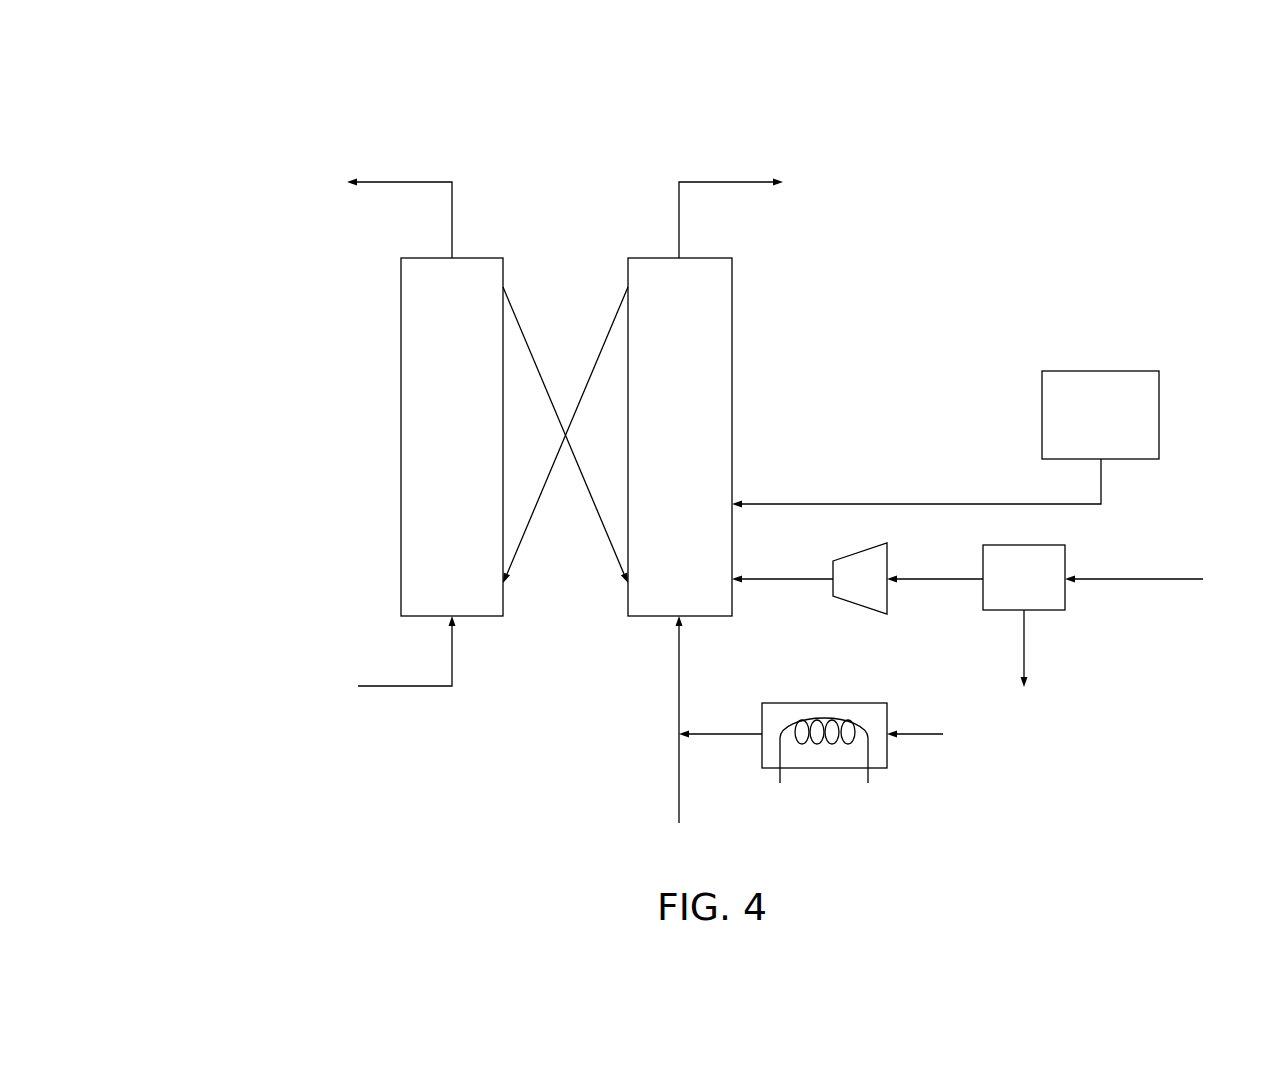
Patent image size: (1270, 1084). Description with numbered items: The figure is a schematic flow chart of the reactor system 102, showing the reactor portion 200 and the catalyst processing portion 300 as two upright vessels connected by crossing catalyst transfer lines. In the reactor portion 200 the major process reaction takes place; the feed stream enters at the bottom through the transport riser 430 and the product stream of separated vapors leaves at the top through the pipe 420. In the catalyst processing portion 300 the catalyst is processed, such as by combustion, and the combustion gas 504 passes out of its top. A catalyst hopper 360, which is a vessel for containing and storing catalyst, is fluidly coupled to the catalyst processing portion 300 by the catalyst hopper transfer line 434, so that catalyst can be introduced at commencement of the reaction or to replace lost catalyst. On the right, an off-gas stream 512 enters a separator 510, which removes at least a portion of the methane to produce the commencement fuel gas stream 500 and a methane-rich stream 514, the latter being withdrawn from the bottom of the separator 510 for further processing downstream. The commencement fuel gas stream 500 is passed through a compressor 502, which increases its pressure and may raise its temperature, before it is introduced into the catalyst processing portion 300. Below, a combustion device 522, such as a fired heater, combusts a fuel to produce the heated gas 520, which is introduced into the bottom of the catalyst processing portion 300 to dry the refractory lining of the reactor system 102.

The reactor system 102 is at (700, 448).
The reactor portion 200 is at (401, 340).
The catalyst processing portion 300 is at (732, 325).
The catalyst hopper 360 is at (1159, 412).
The pipe 420 is at (417, 181).
The transport riser 430 is at (414, 688).
The catalyst hopper transfer line 434 is at (820, 503).
The commencement fuel gas stream 500 is at (935, 580).
The compressor 502 is at (864, 550).
The combustion gas 504 is at (725, 181).
The separator 510 is at (1030, 545).
The off-gas stream 512 is at (1165, 578).
The methane-rich stream 514 is at (1025, 640).
The heated gas 520 is at (727, 733).
The combustion device 522 is at (823, 702).